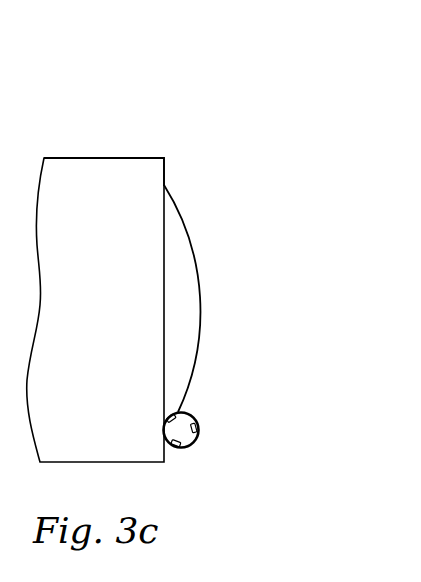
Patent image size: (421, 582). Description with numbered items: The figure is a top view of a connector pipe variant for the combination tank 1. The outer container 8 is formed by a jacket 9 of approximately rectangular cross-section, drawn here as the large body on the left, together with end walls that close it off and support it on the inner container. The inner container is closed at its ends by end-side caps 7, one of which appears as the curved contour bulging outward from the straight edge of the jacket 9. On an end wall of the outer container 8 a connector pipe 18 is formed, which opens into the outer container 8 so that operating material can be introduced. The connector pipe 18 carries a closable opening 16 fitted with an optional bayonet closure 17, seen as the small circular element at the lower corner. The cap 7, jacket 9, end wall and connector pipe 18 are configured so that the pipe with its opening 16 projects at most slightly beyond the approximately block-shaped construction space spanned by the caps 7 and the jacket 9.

The device / assembly 1 is at (146, 276).
The end-side cap 7 is at (200, 294).
The outer container 8 is at (82, 207).
The jacket 9 is at (166, 167).
The opening 16 is at (213, 441).
The bayonet closure 17 is at (200, 430).
The connector pipe 18 is at (182, 427).